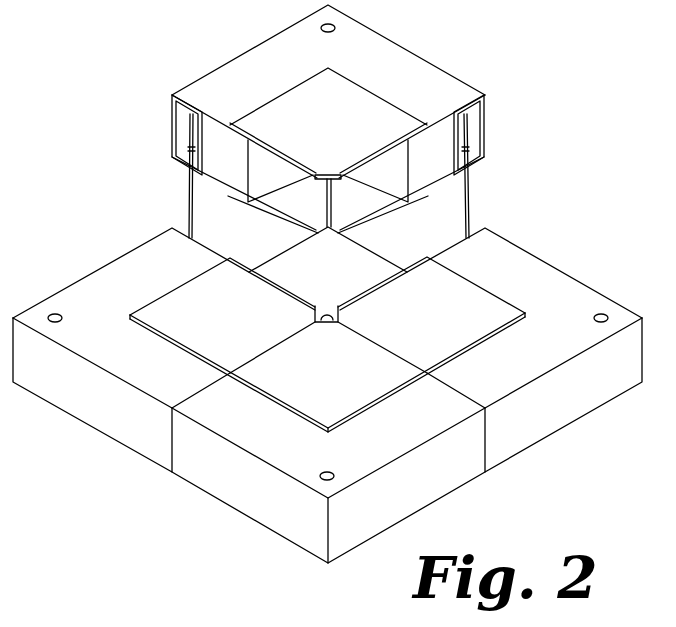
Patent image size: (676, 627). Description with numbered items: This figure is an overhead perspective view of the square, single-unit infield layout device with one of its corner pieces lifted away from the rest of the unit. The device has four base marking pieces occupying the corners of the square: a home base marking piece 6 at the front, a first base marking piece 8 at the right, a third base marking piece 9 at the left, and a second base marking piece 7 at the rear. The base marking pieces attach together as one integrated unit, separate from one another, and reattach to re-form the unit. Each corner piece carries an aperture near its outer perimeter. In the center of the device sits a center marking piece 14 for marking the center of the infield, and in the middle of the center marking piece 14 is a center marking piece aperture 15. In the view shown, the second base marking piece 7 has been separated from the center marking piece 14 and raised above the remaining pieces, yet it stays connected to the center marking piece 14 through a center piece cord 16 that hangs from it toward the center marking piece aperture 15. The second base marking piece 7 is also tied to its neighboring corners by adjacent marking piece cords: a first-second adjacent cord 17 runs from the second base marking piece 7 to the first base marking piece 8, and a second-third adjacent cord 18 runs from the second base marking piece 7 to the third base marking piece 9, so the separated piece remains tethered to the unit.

The home base marking piece 6 is at (357, 454).
The second base marking piece 7 is at (351, 61).
The first base marking piece 8 is at (550, 332).
The third base marking piece 9 is at (92, 330).
The center marking piece 14 is at (338, 279).
The center marking piece aperture 15 is at (331, 314).
The center piece cord 16 is at (332, 203).
The first-second adjacent cord 17 is at (468, 194).
The second-third adjacent cord 18 is at (188, 194).